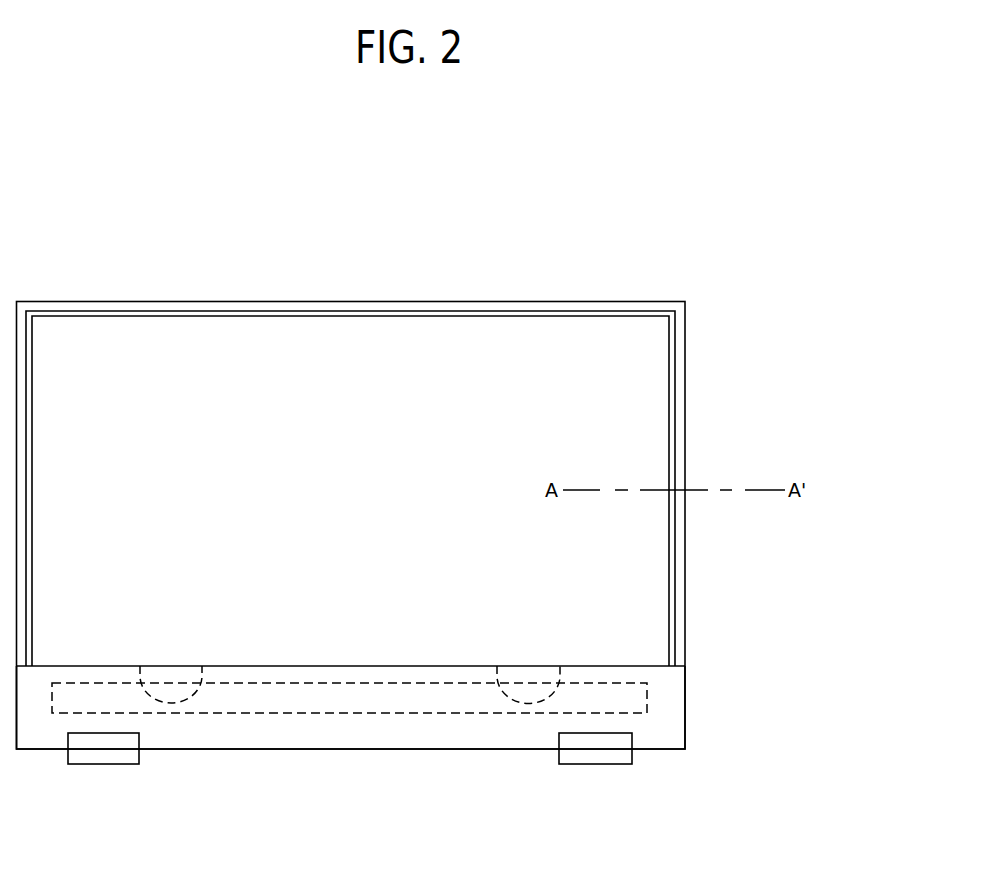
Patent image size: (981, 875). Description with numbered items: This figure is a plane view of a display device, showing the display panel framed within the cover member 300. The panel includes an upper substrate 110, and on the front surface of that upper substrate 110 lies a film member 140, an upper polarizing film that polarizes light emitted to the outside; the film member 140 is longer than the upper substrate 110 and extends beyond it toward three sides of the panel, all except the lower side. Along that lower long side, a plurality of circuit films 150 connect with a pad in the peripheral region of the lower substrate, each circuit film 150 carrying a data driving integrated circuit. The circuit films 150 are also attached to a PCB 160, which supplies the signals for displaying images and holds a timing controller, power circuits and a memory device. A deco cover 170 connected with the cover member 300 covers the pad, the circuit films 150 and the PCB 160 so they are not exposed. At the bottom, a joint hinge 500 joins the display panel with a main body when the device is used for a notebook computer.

The upper substrate 110 is at (523, 316).
The film member 140 is at (586, 311).
The cover member 300 is at (685, 340).
The deco cover 170 is at (685, 705).
The PCB 160 is at (316, 700).
The circuit films 150 is at (187, 683).
The joint hinge 500 is at (103, 755).